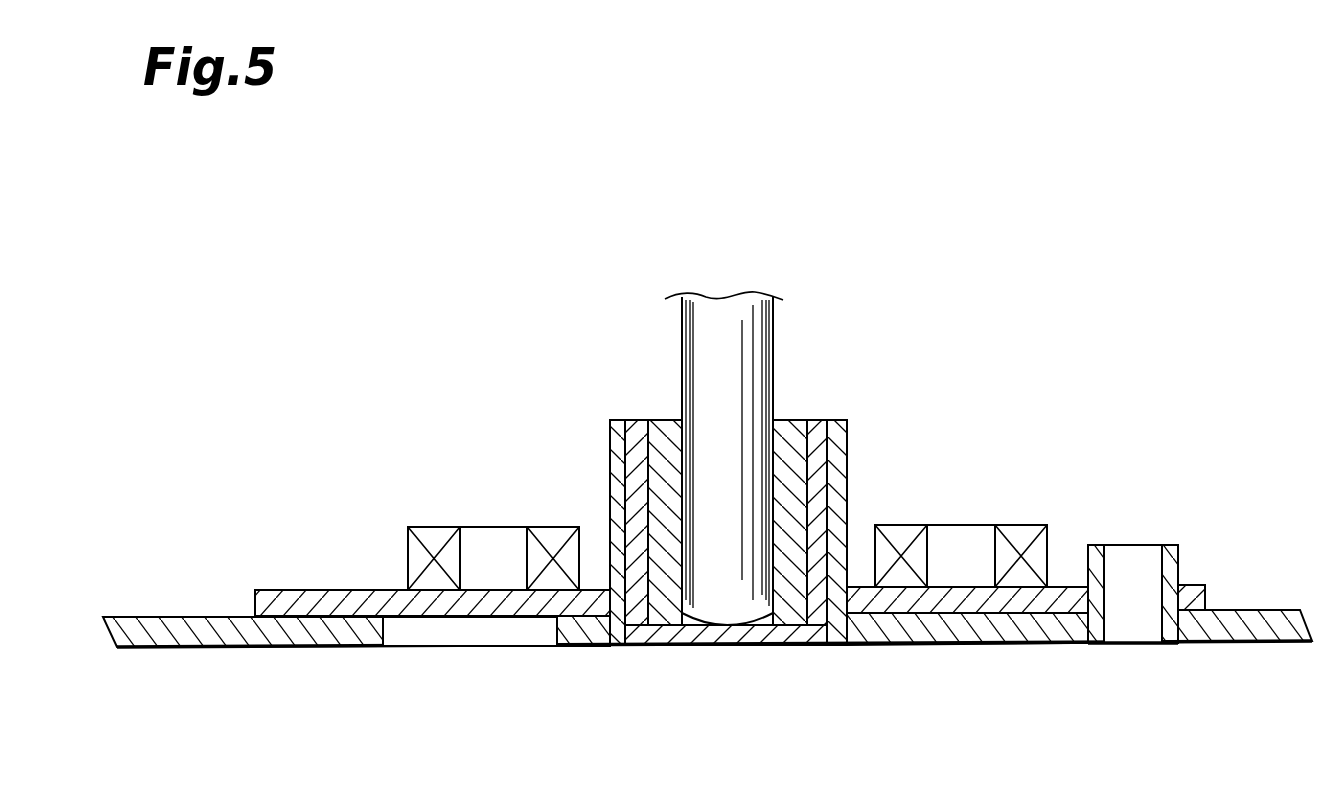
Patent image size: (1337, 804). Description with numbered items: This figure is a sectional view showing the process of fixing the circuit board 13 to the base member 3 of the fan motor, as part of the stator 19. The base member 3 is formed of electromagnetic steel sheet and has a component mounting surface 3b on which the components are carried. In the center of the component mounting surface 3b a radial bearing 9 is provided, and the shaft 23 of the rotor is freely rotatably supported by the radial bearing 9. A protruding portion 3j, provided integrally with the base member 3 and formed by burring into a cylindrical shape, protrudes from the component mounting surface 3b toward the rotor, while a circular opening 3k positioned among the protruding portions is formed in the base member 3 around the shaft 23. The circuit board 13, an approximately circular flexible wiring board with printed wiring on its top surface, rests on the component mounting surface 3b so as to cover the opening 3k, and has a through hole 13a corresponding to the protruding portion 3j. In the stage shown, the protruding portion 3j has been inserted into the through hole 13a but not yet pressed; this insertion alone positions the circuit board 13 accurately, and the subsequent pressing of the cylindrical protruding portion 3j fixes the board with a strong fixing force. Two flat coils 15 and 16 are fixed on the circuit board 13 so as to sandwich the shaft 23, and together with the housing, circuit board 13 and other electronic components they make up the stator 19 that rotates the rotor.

The base member 3 is at (153, 633).
The component mounting surface 3b is at (208, 615).
The protruding portion 3j is at (1180, 545).
The circular opening 3k is at (440, 628).
The radial bearing 9 is at (793, 427).
The circuit board 13 is at (977, 600).
The through hole 13a is at (1107, 603).
The coil 15 is at (1020, 533).
The coil 16 is at (430, 535).
The stator 19 is at (810, 453).
The shaft 23 is at (723, 320).